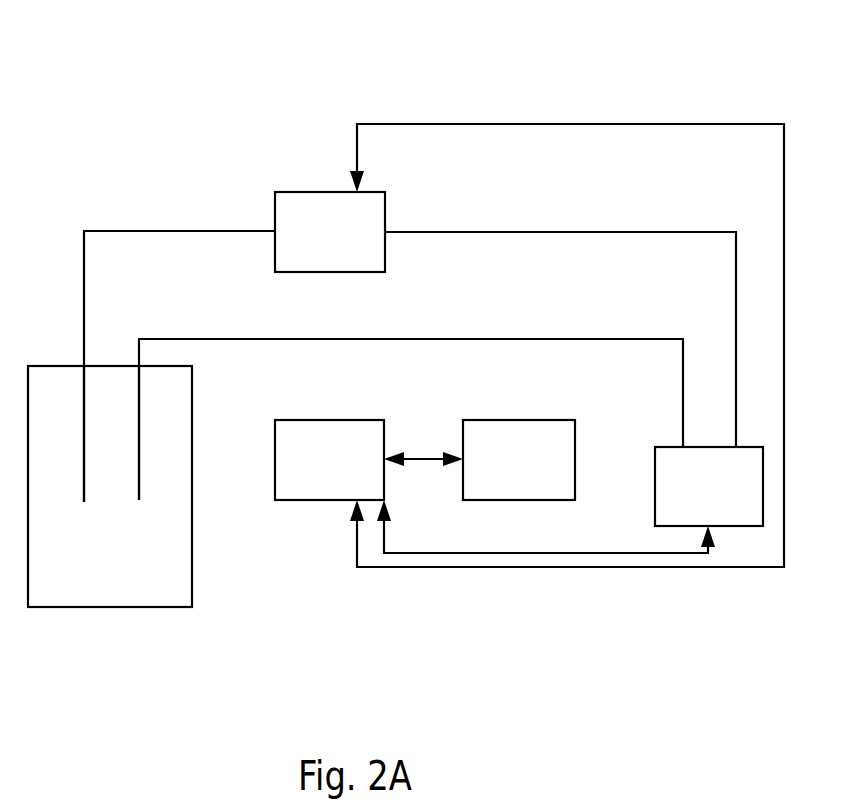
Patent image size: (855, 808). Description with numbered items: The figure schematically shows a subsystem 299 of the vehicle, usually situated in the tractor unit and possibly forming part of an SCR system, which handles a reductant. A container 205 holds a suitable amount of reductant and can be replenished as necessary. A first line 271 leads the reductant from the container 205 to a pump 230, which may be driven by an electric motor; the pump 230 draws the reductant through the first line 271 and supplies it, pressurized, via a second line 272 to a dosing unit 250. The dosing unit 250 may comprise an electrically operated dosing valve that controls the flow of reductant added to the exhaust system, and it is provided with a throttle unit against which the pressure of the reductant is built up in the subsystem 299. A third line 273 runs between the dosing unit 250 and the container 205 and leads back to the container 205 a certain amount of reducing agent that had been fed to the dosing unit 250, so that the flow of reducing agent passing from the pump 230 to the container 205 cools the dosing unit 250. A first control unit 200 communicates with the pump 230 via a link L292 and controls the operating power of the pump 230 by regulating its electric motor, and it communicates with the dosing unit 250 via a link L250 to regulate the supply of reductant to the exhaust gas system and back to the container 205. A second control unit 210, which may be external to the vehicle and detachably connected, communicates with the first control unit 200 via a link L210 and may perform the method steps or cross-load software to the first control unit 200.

The subsystem 299 is at (436, 82).
The container 205 is at (53, 607).
The pump 230 is at (330, 232).
The first control unit 200 is at (329, 460).
The second control unit 210 is at (519, 460).
The dosing unit 250 is at (709, 486).
The first line 271 is at (137, 231).
The second line 272 is at (510, 231).
The third line 273 is at (655, 338).
The link L210 is at (417, 453).
The link L250 is at (582, 553).
The link L292 is at (602, 567).